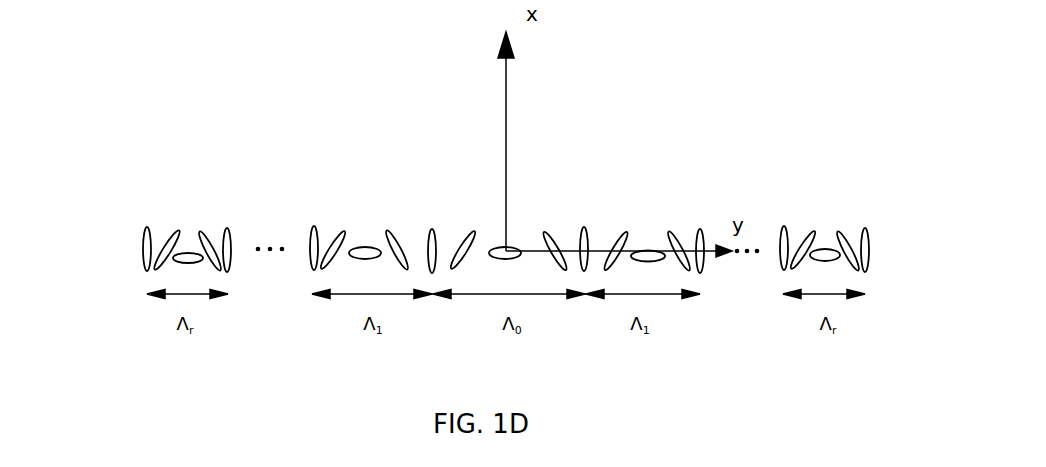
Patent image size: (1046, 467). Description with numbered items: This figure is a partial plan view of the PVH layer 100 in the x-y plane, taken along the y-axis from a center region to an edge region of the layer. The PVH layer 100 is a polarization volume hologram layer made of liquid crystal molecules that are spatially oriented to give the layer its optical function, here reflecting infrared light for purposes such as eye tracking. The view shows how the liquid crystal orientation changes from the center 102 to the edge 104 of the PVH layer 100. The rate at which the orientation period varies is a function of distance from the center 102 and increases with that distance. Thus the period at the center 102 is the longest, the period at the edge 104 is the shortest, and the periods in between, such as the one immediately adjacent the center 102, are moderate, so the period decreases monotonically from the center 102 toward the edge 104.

The PVH layer 100 is at (190, 60).
The center 102 is at (505, 250).
The edge 104 is at (897, 210).